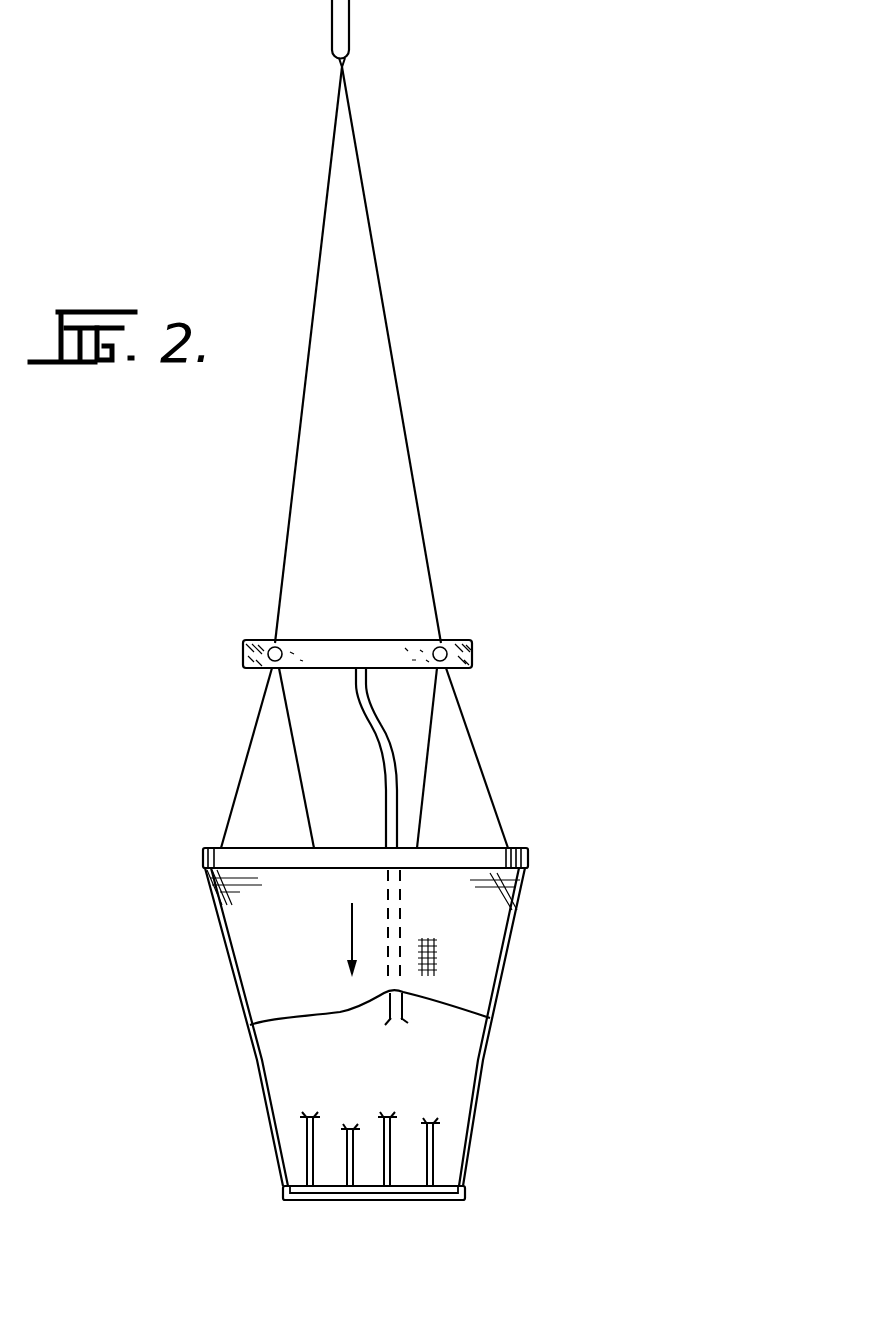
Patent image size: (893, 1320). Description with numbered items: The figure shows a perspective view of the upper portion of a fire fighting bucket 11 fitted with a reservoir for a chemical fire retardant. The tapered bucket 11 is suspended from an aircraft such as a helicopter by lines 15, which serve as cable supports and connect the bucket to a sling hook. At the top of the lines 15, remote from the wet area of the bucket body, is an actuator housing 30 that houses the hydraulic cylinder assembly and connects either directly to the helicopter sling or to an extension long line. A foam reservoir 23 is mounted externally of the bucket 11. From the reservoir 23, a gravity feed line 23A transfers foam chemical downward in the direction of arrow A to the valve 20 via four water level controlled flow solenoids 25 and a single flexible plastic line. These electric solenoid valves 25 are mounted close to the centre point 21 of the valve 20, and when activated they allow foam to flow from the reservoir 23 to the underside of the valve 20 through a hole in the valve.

The bucket 11 is at (483, 973).
The lines 15 is at (308, 355).
The valve 20 is at (409, 1191).
The centre point 21 is at (370, 1188).
The foam reservoir 23 is at (327, 648).
The gravity feed line 23A is at (388, 748).
The water level controlled flow solenoids 25 is at (530, 1097).
The actuator housing 30 is at (338, 22).